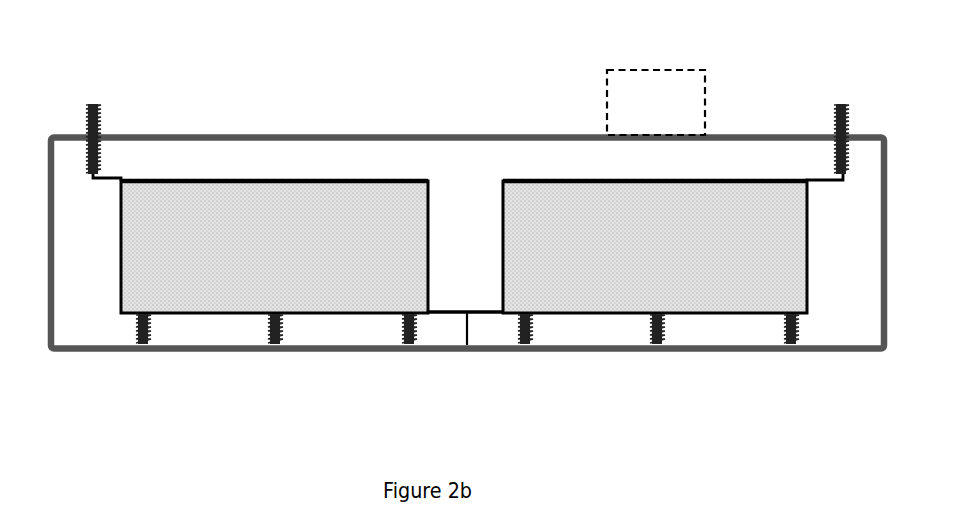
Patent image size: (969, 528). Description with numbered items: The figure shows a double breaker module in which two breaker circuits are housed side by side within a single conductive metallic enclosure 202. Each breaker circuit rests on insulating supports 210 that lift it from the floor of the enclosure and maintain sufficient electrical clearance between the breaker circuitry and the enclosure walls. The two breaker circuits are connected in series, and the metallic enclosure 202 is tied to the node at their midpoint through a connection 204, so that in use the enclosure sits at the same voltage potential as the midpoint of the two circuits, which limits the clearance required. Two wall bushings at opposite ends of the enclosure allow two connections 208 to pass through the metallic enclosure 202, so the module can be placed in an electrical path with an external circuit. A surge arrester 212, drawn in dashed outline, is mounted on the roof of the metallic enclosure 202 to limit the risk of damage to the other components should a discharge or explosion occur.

The metallic enclosure 202 is at (432, 134).
The connection 204 is at (470, 350).
The connection 208 is at (822, 184).
The insulating support 210 is at (150, 332).
The surge arrester 212 is at (708, 70).